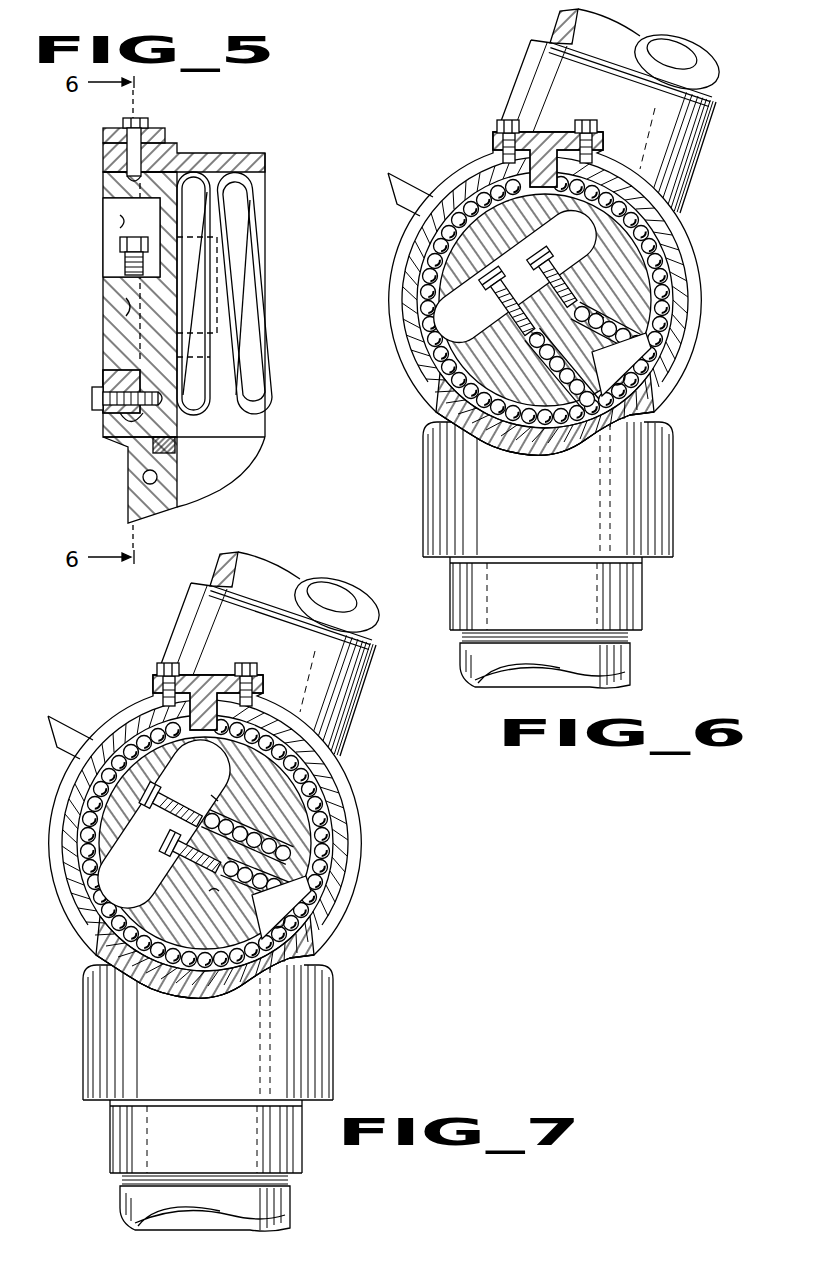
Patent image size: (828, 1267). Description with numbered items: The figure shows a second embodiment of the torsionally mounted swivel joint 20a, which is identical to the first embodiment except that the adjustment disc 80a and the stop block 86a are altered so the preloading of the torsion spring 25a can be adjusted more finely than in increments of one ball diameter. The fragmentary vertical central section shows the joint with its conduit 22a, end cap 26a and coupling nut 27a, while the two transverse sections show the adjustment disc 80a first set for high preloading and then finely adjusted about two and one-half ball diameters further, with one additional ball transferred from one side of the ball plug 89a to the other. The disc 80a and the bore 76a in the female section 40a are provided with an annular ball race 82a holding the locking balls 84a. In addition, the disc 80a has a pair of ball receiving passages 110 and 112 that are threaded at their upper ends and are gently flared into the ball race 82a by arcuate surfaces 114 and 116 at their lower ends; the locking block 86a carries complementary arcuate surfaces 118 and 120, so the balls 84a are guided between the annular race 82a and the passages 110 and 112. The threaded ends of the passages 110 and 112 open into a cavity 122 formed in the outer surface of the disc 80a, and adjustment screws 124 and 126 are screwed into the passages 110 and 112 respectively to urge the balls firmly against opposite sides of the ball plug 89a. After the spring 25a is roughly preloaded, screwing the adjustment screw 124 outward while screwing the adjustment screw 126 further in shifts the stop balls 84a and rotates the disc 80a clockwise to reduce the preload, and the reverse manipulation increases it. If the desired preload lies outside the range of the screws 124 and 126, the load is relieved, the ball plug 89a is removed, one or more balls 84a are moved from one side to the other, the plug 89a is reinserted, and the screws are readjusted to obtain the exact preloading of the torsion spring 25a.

In FIG. 5, the torsionally mounted swivel joint 20a is at (237, 115).
In FIG. 6, the torsionally mounted swivel joint 20a is at (707, 203).
In FIG. 7, the torsionally mounted swivel joint 20a is at (234, 884).
In FIG. 6, the conduit 22a is at (720, 50).
In FIG. 7, the conduit 22a is at (272, 647).
In FIG. 5, the torsion spring 25a is at (250, 265).
In FIG. 6, the conduit end cap 26a is at (550, 27).
In FIG. 7, the conduit end cap 26a is at (193, 569).
In FIG. 6, the coupling nut 27a is at (630, 655).
In FIG. 7, the coupling nut 27a is at (205, 1203).
In FIG. 5, the female section 40a is at (257, 155).
In FIG. 6, the female section 40a is at (705, 283).
In FIG. 7, the female section 40a is at (248, 924).
In FIG. 5, the bore 76a is at (108, 180).
In FIG. 5, the adjustment disc 80a is at (110, 327).
In FIG. 6, the adjustment disc 80a is at (483, 382).
In FIG. 7, the adjustment disc 80a is at (174, 843).
In FIG. 5, the annular ball race 82a is at (117, 220).
In FIG. 6, the annular ball race 82a is at (677, 262).
In FIG. 7, the annular ball race 82a is at (231, 843).
In FIG. 6, the locking balls 84a is at (448, 223).
In FIG. 7, the locking balls 84a is at (210, 867).
In FIG. 5, the stop block 86a is at (110, 378).
In FIG. 6, the stop block 86a is at (628, 383).
In FIG. 7, the stop block 86a is at (338, 892).
In FIG. 5, the ball plug 89a is at (113, 137).
In FIG. 6, the ball plug 89a is at (497, 142).
In FIG. 7, the ball plug 89a is at (180, 696).
In FIG. 5, the ball receiving passage 110 is at (113, 295).
In FIG. 6, the ball receiving passage 110 is at (533, 333).
In FIG. 7, the ball receiving passage 110 is at (171, 877).
In FIG. 6, the ball receiving passage 112 is at (600, 310).
In FIG. 7, the ball receiving passage 112 is at (194, 784).
In FIG. 6, the arcuate surface 114 is at (527, 450).
In FIG. 7, the arcuate surface 114 is at (243, 951).
In FIG. 6, the arcuate surface 116 is at (640, 343).
In FIG. 7, the arcuate surface 116 is at (308, 836).
In FIG. 6, the arcuate surface 118 is at (600, 400).
In FIG. 7, the arcuate surface 118 is at (326, 907).
In FIG. 6, the arcuate surface 120 is at (647, 352).
In FIG. 7, the arcuate surface 120 is at (318, 869).
In FIG. 5, the cavity 122 is at (110, 207).
In FIG. 6, the cavity 122 is at (463, 250).
In FIG. 7, the cavity 122 is at (164, 824).
In FIG. 5, the adjustment screw 124 is at (120, 248).
In FIG. 6, the adjustment screw 124 is at (497, 295).
In FIG. 7, the adjustment screw 124 is at (169, 848).
In FIG. 6, the adjustment screw 126 is at (547, 245).
In FIG. 7, the adjustment screw 126 is at (159, 807).